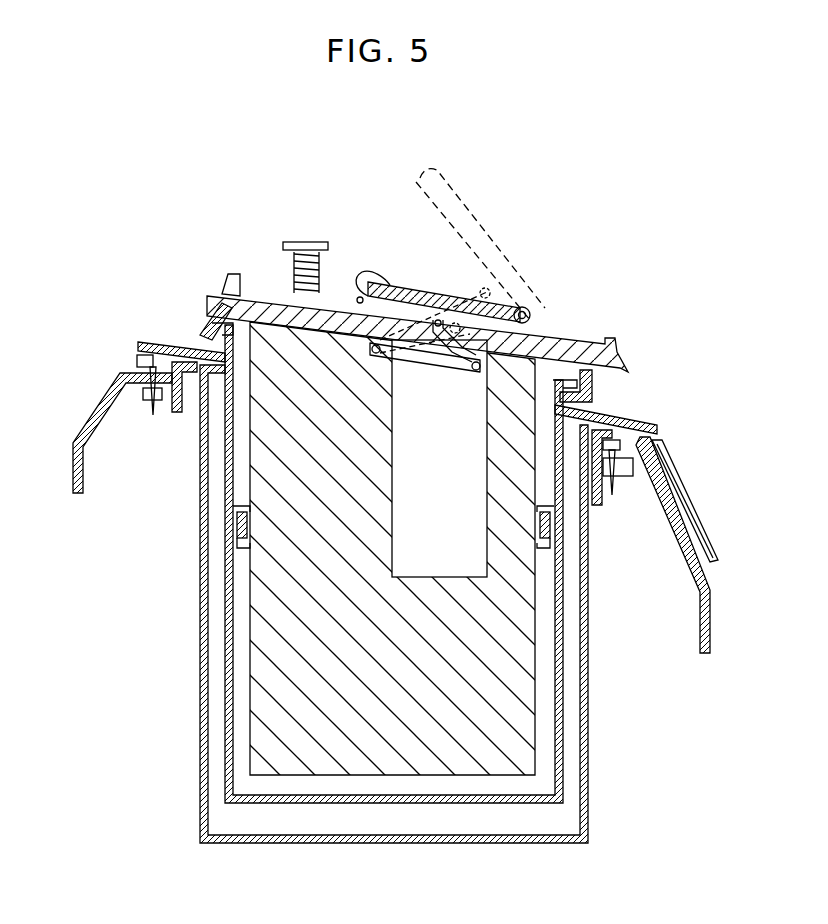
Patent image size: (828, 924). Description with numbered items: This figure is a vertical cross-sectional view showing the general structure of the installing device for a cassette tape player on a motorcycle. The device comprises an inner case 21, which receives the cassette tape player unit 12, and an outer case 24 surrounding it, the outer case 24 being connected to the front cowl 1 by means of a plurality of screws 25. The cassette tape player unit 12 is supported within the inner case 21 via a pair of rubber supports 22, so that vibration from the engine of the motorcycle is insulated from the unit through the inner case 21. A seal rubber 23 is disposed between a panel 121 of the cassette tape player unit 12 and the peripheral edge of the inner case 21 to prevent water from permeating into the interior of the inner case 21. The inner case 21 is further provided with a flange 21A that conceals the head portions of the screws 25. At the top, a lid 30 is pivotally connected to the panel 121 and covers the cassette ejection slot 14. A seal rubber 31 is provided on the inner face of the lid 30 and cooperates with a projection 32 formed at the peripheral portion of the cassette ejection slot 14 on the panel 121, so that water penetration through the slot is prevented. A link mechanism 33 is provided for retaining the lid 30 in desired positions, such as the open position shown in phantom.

The front cowl 1 is at (97, 418).
The cassette tape player unit 12 is at (398, 764).
The cassette ejection slot 14 is at (493, 347).
The inner case 21 is at (226, 488).
The flange 21A is at (178, 342).
The rubber supports 22 is at (243, 522).
The seal rubber 23 is at (215, 330).
The outer case 24 is at (588, 778).
The screws 25 is at (142, 361).
The lid 30 is at (371, 277).
The seal rubber 31 is at (420, 298).
The projection 32 is at (360, 298).
The link mechanism 33 is at (432, 366).
The panel 121 is at (232, 292).